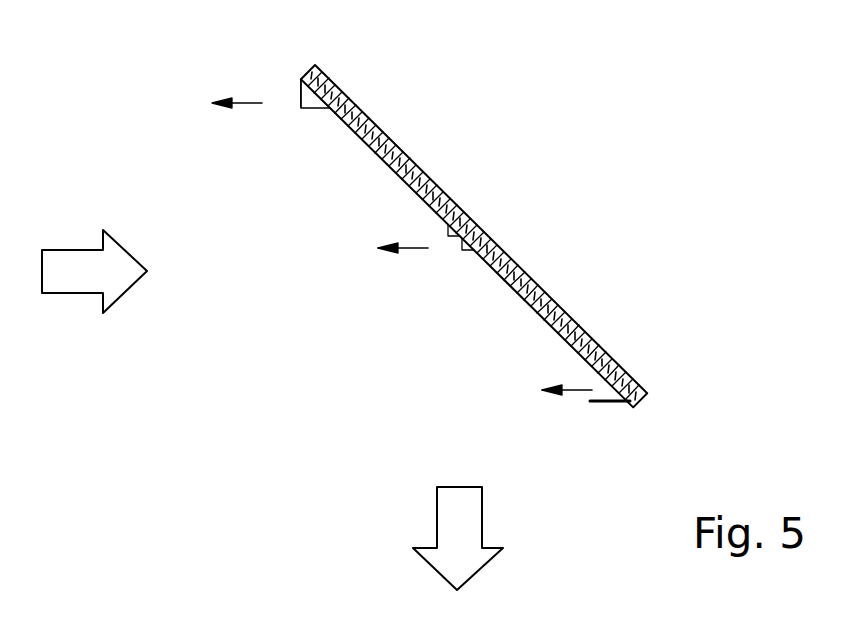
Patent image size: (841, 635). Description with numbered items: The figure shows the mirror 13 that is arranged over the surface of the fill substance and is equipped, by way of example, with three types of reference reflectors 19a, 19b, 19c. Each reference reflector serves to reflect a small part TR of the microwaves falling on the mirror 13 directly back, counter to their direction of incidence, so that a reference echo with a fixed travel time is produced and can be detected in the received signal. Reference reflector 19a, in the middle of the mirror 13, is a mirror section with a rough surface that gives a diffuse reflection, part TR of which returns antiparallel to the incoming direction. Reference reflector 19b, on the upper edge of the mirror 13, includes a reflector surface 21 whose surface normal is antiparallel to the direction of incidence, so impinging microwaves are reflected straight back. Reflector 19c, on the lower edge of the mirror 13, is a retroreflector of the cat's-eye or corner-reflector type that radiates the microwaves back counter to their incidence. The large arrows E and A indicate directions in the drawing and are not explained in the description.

The mirror 13 is at (566, 284).
The reference reflector 19a is at (465, 251).
The reference reflector 19b is at (313, 103).
The reference reflector 19c is at (608, 403).
The reflector surface 21 is at (298, 92).
The entry direction arrow E is at (75, 265).
The exit direction arrow A is at (465, 520).
The reflected part of the microwaves TR is at (250, 104).